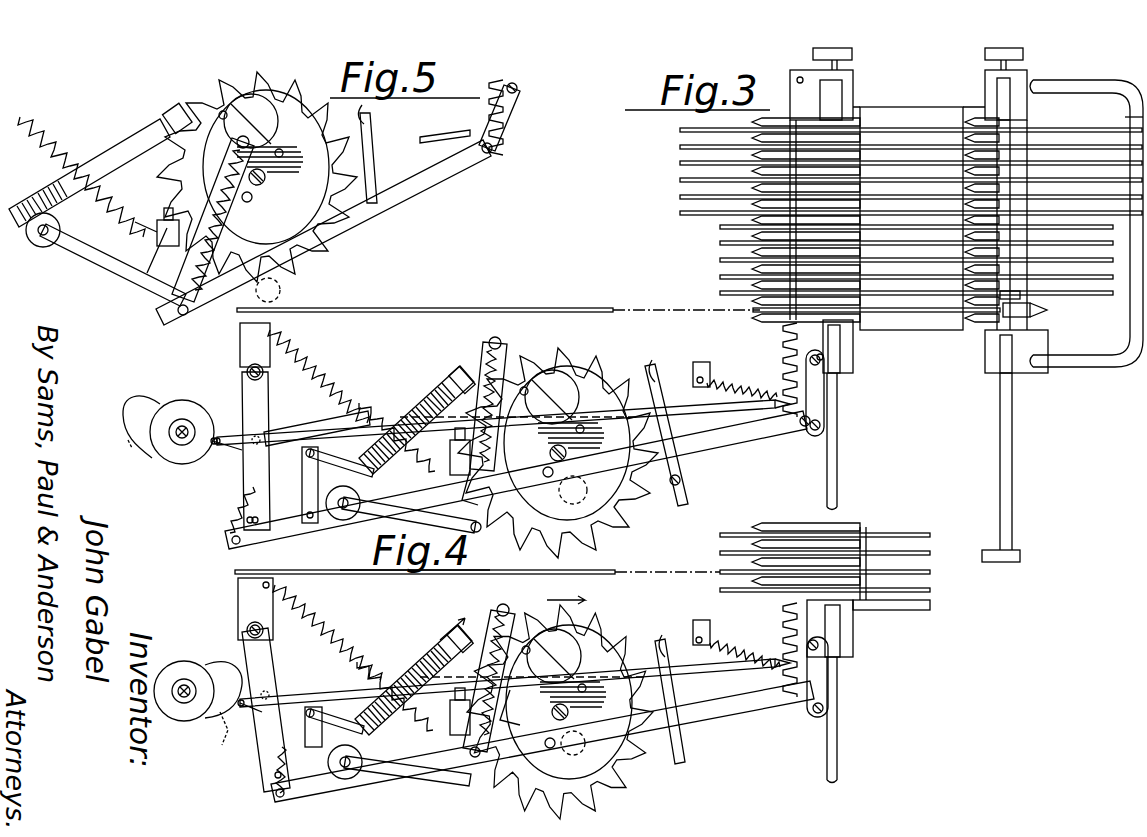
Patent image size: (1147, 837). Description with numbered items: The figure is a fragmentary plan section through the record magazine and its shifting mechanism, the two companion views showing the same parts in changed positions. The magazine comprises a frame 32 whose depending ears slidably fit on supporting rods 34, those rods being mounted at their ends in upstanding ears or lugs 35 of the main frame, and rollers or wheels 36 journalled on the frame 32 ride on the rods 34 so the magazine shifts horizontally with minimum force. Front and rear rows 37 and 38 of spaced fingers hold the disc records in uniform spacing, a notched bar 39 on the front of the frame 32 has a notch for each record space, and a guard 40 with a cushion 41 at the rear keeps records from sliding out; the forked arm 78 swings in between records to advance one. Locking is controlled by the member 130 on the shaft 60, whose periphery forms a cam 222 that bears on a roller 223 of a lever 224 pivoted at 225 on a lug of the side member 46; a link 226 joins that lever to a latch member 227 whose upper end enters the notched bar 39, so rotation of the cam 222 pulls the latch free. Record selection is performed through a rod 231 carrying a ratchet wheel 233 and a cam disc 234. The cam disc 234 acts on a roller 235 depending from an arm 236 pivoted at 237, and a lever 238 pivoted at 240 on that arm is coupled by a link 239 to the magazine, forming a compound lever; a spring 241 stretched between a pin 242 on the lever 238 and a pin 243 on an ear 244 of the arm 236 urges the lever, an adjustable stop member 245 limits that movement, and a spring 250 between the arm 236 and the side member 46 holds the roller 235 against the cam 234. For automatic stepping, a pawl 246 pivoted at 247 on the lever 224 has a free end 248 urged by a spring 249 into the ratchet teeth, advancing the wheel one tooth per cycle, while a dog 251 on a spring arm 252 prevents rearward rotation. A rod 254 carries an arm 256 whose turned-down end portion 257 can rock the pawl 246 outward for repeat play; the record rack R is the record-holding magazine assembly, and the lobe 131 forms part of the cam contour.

In FIG. 3, the record magazine frame 32 is at (1022, 112).
In FIG. 4, the record magazine frame 32 is at (885, 610).
In FIG. 3, the supporting rods 34 is at (845, 68).
In FIG. 4, the supporting rods 34 is at (838, 757).
In FIG. 3, the upstanding ears or lugs 35 is at (852, 54).
In FIG. 3, the rollers or wheels 36 is at (842, 93).
In FIG. 4, the rollers or wheels 36 is at (842, 643).
In FIG. 3, the front row of spaced fingers 37 is at (720, 277).
In FIG. 4, the front row of spaced fingers 37 is at (760, 593).
In FIG. 3, the rear row of spaced fingers 38 is at (965, 286).
In FIG. 5, the notched bar 39 is at (486, 92).
In FIG. 3, the notched bar 39 is at (780, 346).
In FIG. 4, the notched bar 39 is at (780, 645).
In FIG. 3, the guard 40 is at (1110, 75).
In FIG. 3, the cushion 41 is at (1125, 117).
In FIG. 3, the side member 46 is at (240, 331).
In FIG. 4, the side member 46 is at (238, 591).
In FIG. 3, the shaft 60 is at (184, 420).
In FIG. 4, the shaft 60 is at (182, 678).
In FIG. 3, the arm 78 is at (1046, 313).
In FIG. 3, the cam member 130 is at (152, 402).
In FIG. 4, the cam member 130 is at (200, 715).
In FIG. 3, the cam lobe 131 is at (134, 450).
In FIG. 4, the cam lobe 131 is at (228, 662).
In FIG. 3, the cam 222 is at (135, 398).
In FIG. 4, the cam 222 is at (215, 735).
In FIG. 3, the roller 223 is at (215, 448).
In FIG. 4, the roller 223 is at (246, 708).
In FIG. 3, the lever 224 is at (250, 396).
In FIG. 4, the lever 224 is at (272, 660).
In FIG. 3, the pivot 225 is at (247, 370).
In FIG. 4, the pivot 225 is at (247, 624).
In FIG. 3, the link 226 is at (305, 437).
In FIG. 4, the link 226 is at (696, 672).
In FIG. 5, the latch member 227 is at (462, 133).
In FIG. 3, the latch member 227 is at (745, 400).
In FIG. 4, the latch member 227 is at (765, 672).
In FIG. 5, the rod 231 is at (268, 172).
In FIG. 3, the rod 231 is at (566, 455).
In FIG. 4, the rod 231 is at (553, 713).
In FIG. 5, the ratchet wheel 233 is at (262, 88).
In FIG. 3, the ratchet wheel 233 is at (590, 380).
In FIG. 4, the ratchet wheel 233 is at (620, 650).
In FIG. 5, the cam disc 234 is at (265, 150).
In FIG. 3, the cam disc 234 is at (620, 390).
In FIG. 4, the cam disc 234 is at (605, 640).
In FIG. 5, the roller 235 is at (282, 293).
In FIG. 3, the roller 235 is at (586, 490).
In FIG. 4, the roller 235 is at (588, 742).
In FIG. 5, the arm 236 is at (98, 262).
In FIG. 3, the arm 236 is at (409, 515).
In FIG. 4, the arm 236 is at (407, 773).
In FIG. 5, the pivot shaft 237 is at (42, 248).
In FIG. 3, the pivot shaft 237 is at (343, 512).
In FIG. 4, the pivot shaft 237 is at (347, 770).
In FIG. 5, the lever 238 is at (398, 208).
In FIG. 3, the lever 238 is at (760, 440).
In FIG. 4, the lever 238 is at (706, 730).
In FIG. 5, the link 239 is at (508, 125).
In FIG. 3, the link 239 is at (826, 400).
In FIG. 4, the link 239 is at (830, 700).
In FIG. 5, the pivot 240 is at (250, 204).
In FIG. 3, the pivot 240 is at (549, 478).
In FIG. 4, the pivot 240 is at (555, 740).
In FIG. 5, the spring 241 is at (180, 292).
In FIG. 3, the spring 241 is at (480, 370).
In FIG. 4, the spring 241 is at (516, 707).
In FIG. 5, the pin 242 is at (182, 316).
In FIG. 3, the pin 242 is at (468, 525).
In FIG. 4, the pin 242 is at (472, 760).
In FIG. 5, the pin 243 is at (243, 136).
In FIG. 3, the pin 243 is at (500, 338).
In FIG. 4, the pin 243 is at (505, 604).
In FIG. 5, the ear 244 is at (210, 192).
In FIG. 3, the ear 244 is at (488, 340).
In FIG. 4, the ear 244 is at (496, 612).
In FIG. 5, the adjustable stop member 245 is at (158, 250).
In FIG. 3, the adjustable stop member 245 is at (455, 478).
In FIG. 4, the adjustable stop member 245 is at (452, 735).
In FIG. 5, the pawl 246 is at (105, 150).
In FIG. 3, the pawl 246 is at (400, 450).
In FIG. 4, the pawl 246 is at (425, 665).
In FIG. 3, the pivot 247 is at (255, 530).
In FIG. 4, the pivot 247 is at (300, 780).
In FIG. 5, the free end of pawl 248 is at (178, 107).
In FIG. 3, the free end of pawl 248 is at (456, 375).
In FIG. 4, the free end of pawl 248 is at (460, 638).
In FIG. 3, the spring 249 is at (236, 510).
In FIG. 4, the spring 249 is at (275, 770).
In FIG. 5, the spring 250 is at (35, 128).
In FIG. 3, the spring 250 is at (322, 372).
In FIG. 4, the spring 250 is at (305, 608).
In FIG. 5, the dog 251 is at (364, 118).
In FIG. 3, the dog 251 is at (658, 375).
In FIG. 4, the dog 251 is at (664, 642).
In FIG. 5, the spring arm 252 is at (372, 160).
In FIG. 3, the spring arm 252 is at (687, 468).
In FIG. 4, the spring arm 252 is at (672, 690).
In FIG. 3, the rod 254 is at (302, 460).
In FIG. 4, the rod 254 is at (312, 706).
In FIG. 3, the arm 256 is at (330, 425).
In FIG. 3, the turned-down end portion 257 is at (372, 476).
In FIG. 4, the turned-down end portion 257 is at (365, 728).
In FIG. 3, the rack R is at (680, 180).
In FIG. 4, the rack R is at (910, 560).